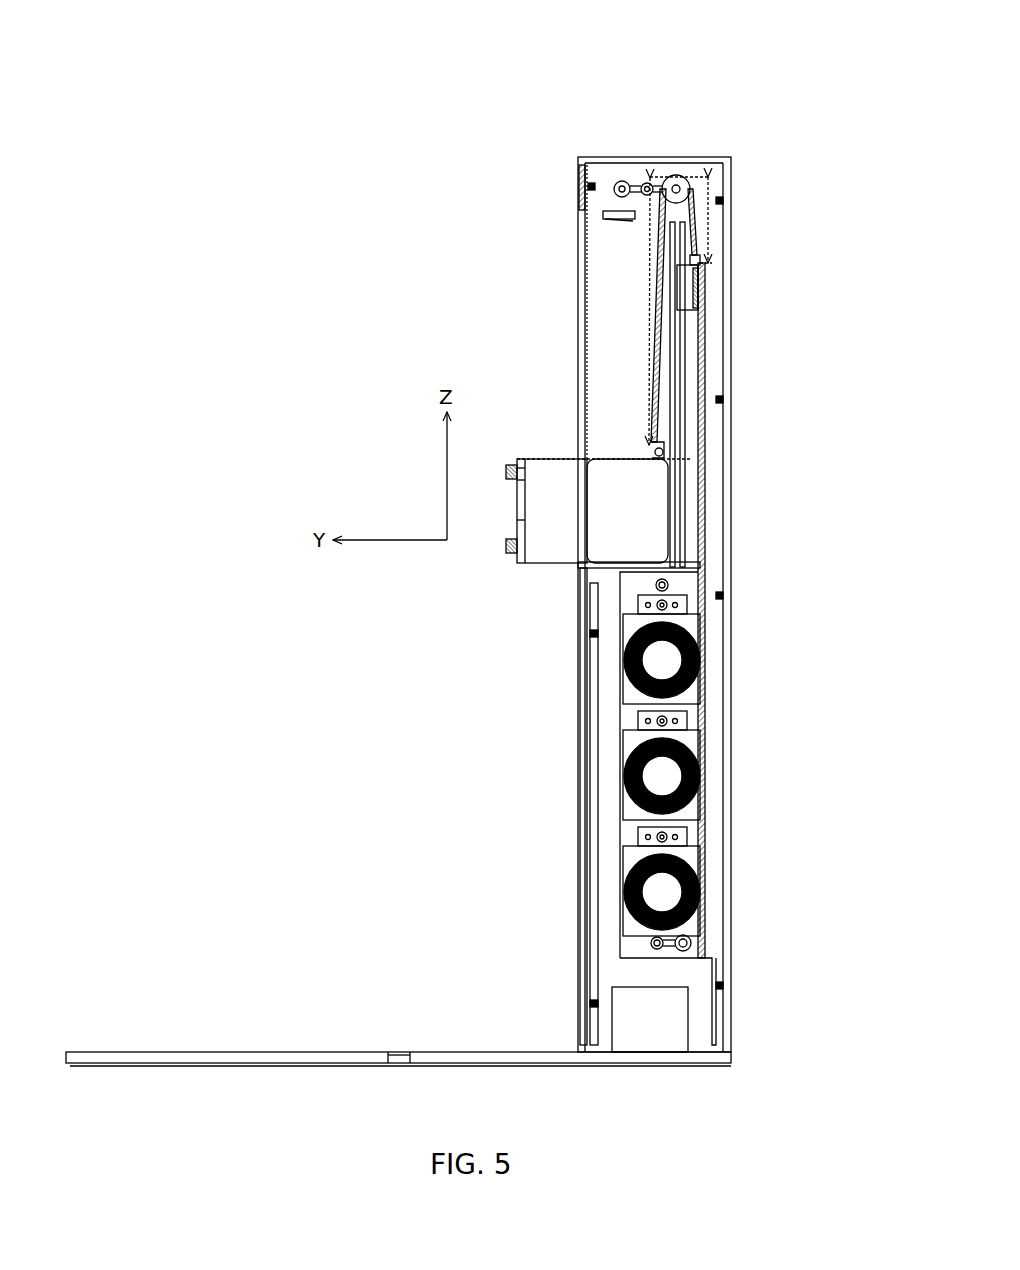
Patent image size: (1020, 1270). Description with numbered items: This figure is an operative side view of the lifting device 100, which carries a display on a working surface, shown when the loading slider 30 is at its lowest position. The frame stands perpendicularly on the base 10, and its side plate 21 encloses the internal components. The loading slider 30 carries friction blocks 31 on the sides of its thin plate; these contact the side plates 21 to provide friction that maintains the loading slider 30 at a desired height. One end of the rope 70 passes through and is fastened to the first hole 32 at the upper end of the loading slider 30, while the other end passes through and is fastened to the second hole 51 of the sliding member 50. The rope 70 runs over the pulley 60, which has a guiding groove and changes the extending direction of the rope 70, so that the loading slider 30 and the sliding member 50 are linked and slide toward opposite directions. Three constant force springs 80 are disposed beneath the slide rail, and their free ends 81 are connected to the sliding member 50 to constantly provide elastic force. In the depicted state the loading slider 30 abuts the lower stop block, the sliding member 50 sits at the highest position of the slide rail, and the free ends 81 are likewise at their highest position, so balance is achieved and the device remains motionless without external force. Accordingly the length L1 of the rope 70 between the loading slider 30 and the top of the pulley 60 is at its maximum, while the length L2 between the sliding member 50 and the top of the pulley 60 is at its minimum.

The lifting device 100 is at (708, 33).
The base 10 is at (343, 1052).
The side plate 21 is at (608, 353).
The loading slider 30 is at (553, 458).
The friction block 31 is at (607, 533).
The first hole 32 is at (660, 456).
The sliding member 50 is at (692, 293).
The second hole 51 is at (701, 266).
The pulley 60 is at (676, 187).
The rope 70 is at (693, 233).
The constant force spring 80 is at (704, 660).
The free end 81 is at (702, 303).
The length of the rope between the loading slider and the top of the pulley L1 is at (652, 290).
The length of the rope between the sliding member and the top of the pulley L2 is at (710, 196).